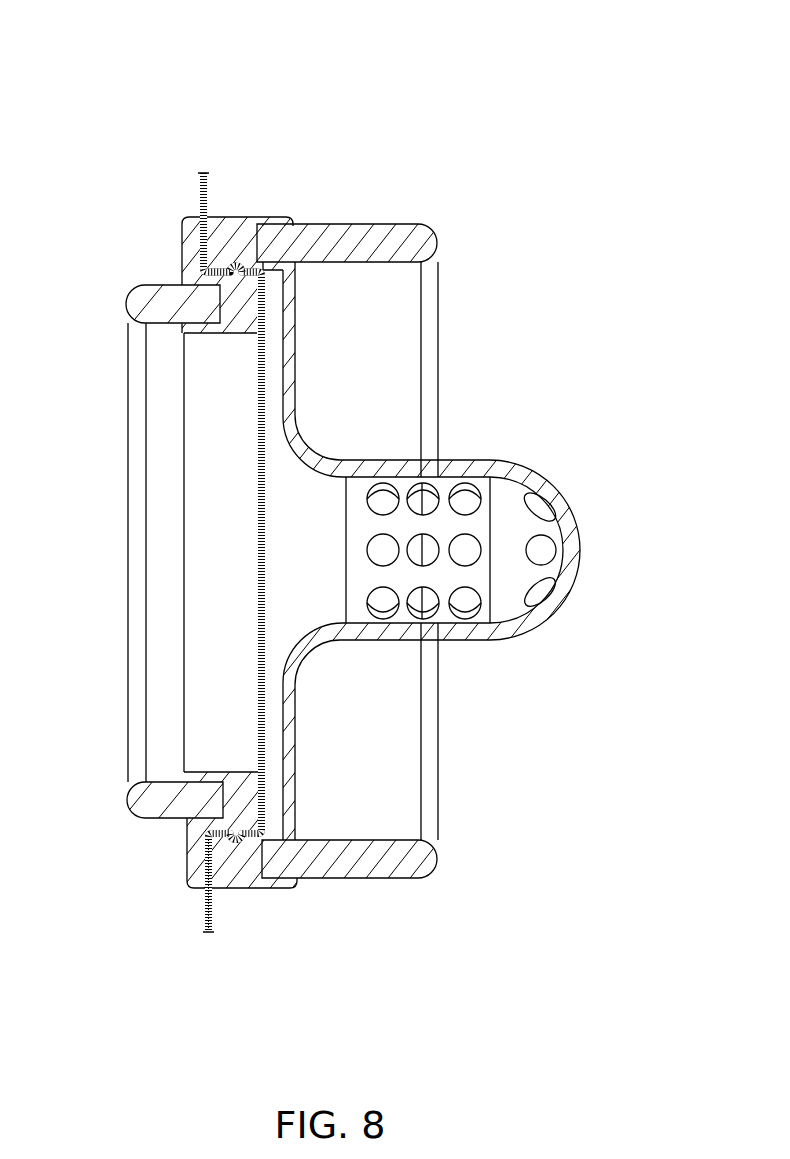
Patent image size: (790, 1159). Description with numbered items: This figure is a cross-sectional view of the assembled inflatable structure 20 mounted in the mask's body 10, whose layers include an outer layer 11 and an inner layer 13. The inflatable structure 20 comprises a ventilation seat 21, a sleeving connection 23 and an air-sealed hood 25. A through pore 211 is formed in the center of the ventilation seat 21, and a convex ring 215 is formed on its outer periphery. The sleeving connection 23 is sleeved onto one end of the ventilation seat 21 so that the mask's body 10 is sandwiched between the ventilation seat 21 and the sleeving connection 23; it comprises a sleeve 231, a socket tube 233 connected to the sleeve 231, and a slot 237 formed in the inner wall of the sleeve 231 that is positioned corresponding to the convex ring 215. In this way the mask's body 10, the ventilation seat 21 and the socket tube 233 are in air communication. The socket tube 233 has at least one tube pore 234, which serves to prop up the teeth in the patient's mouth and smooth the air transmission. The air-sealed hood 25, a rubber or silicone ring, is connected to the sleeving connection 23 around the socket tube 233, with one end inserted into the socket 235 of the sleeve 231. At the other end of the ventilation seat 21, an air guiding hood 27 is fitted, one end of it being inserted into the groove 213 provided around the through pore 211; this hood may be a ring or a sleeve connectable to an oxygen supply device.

The mask's body 10 is at (191, 565).
The outer layer 11 is at (212, 916).
The inner layer 13 is at (204, 901).
The inflatable structure 20 is at (224, 72).
The ventilation seat 21 is at (176, 208).
The sleeving connection 23 is at (447, 512).
The air-sealed hood 25 is at (340, 237).
The air guiding hood 27 is at (164, 812).
The through pore 211 is at (148, 536).
The groove 213 is at (190, 783).
The convex ring 215 is at (220, 288).
The sleeve 231 is at (291, 373).
The socket tube 233 is at (495, 458).
The tube pore 234 is at (542, 550).
The socket 235 is at (273, 879).
The slot 237 is at (234, 270).